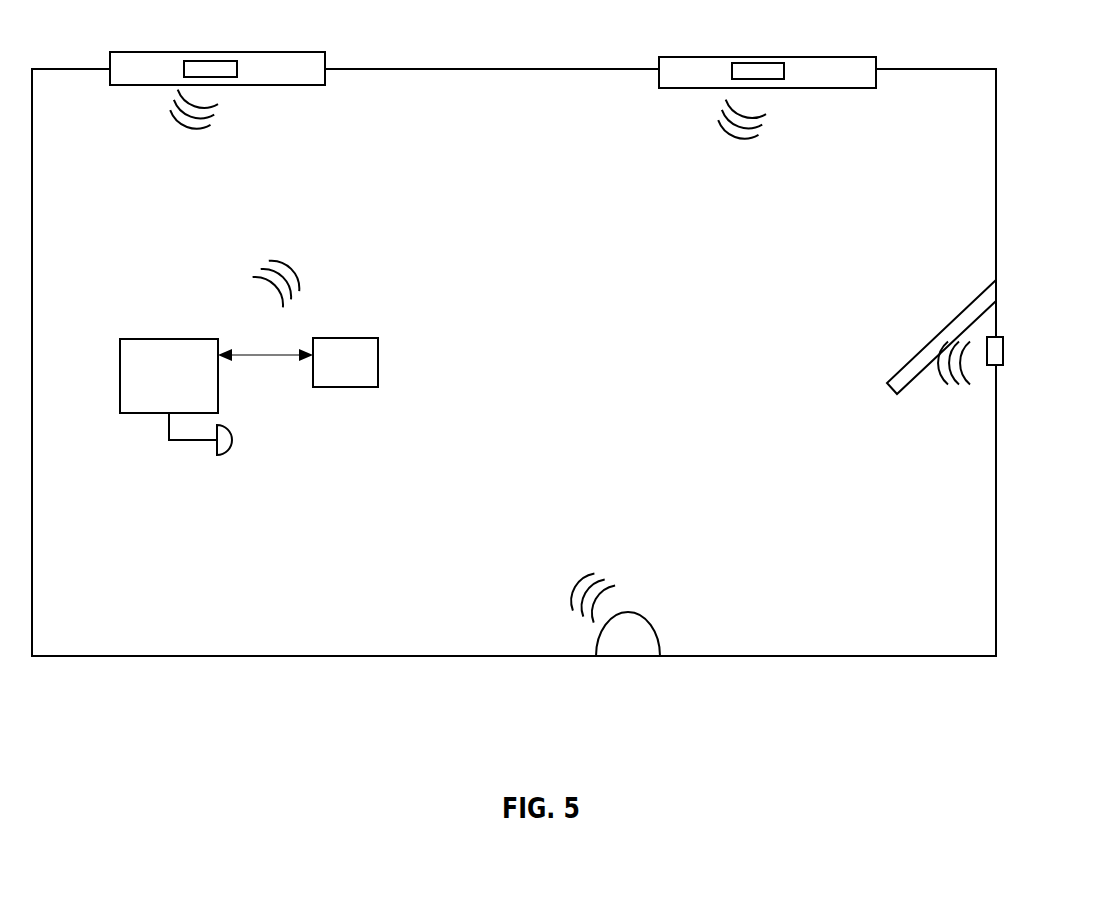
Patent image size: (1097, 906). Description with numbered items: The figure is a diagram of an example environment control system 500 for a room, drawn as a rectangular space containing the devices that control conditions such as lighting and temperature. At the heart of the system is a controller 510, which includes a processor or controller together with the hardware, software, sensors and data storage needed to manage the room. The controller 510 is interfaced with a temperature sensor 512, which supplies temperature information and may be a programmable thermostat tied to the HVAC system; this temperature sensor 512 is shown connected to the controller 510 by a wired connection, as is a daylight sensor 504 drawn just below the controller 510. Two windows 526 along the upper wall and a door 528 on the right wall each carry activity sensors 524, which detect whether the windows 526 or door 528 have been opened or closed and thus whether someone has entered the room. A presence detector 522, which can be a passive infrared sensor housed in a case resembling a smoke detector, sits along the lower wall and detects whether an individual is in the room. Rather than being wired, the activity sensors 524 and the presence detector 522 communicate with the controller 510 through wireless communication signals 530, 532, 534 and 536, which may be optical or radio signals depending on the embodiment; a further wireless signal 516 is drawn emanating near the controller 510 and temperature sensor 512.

The system 500 is at (957, 161).
The daylight sensor 504 is at (233, 443).
The controller 510 is at (173, 339).
The temperature sensor 512 is at (346, 337).
The wireless signal 516 is at (285, 263).
The presence detector 522 is at (653, 628).
The activity sensors 524 is at (205, 60).
The windows 526 is at (277, 53).
The door 528 is at (963, 320).
The wireless communication signal 530 is at (173, 112).
The wireless communication signal 532 is at (755, 127).
The wireless communication signal 534 is at (942, 378).
The wireless communication signal 536 is at (605, 582).